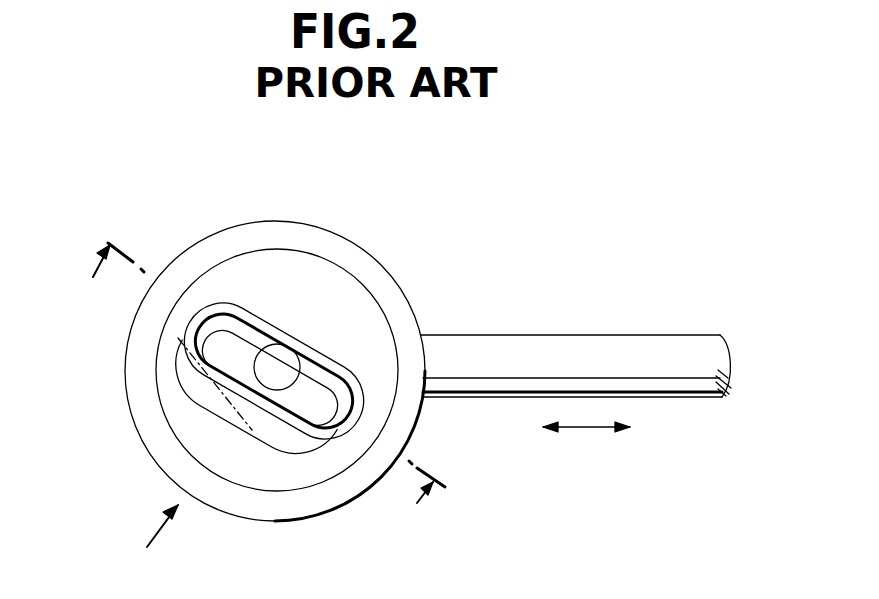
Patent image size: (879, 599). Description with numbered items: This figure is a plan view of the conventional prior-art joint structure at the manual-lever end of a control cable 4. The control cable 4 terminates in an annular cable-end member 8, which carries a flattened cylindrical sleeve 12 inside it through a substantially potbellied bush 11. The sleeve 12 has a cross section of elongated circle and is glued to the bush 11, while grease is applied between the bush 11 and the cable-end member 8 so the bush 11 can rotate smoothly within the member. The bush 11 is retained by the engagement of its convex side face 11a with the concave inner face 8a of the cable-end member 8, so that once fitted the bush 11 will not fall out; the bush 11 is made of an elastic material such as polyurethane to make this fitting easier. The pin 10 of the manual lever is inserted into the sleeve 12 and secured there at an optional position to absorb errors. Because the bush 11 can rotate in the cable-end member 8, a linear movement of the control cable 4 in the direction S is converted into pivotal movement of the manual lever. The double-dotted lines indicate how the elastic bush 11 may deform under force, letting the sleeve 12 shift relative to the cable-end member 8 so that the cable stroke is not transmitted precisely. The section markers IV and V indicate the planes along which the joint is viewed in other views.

The control cable 4 is at (598, 335).
The cable-end member 8 is at (220, 231).
The inner face 8a is at (162, 392).
The pin 10 is at (305, 356).
The bush 11 is at (310, 268).
The side face 11a is at (173, 433).
The sleeve 12 is at (303, 420).
The direction of linear movement S is at (588, 427).
The section line IV is at (148, 548).
The section line V is at (260, 388).